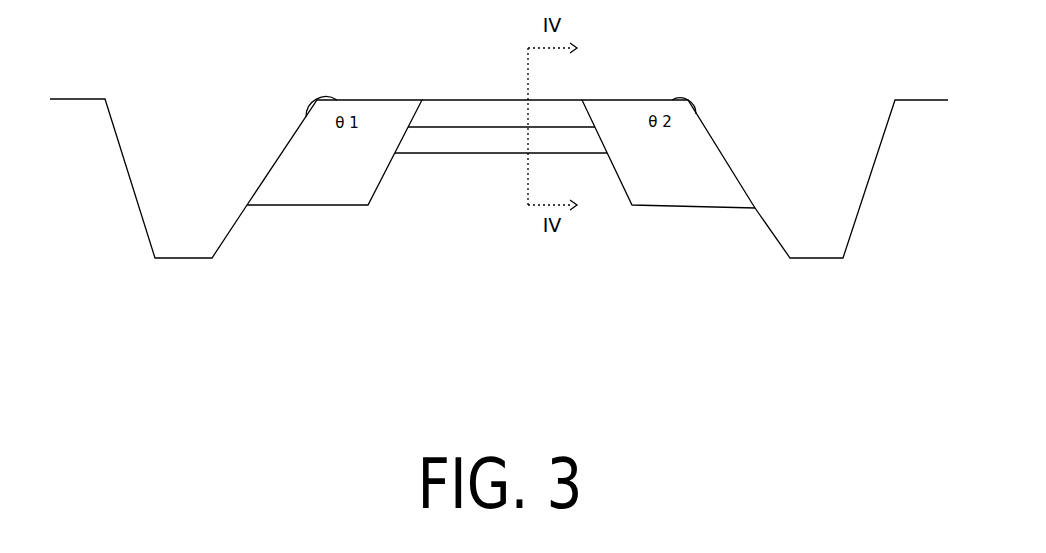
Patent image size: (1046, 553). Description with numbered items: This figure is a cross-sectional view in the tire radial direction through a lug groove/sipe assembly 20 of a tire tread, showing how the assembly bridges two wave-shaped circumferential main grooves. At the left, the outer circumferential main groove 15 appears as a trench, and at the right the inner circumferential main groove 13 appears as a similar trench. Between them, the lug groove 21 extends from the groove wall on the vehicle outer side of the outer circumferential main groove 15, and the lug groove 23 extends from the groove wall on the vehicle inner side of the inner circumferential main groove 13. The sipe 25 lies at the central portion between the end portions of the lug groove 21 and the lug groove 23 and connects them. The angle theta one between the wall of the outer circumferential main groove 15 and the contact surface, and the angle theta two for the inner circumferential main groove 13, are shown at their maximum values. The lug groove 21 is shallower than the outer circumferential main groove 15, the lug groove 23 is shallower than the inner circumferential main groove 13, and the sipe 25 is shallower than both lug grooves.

The inner circumferential main groove 13 is at (820, 94).
The outer circumferential main groove 15 is at (205, 102).
The lug groove/sipe assembly 20 is at (295, 255).
The lug groove 21 is at (308, 192).
The lug groove 23 is at (677, 193).
The sipe 25 is at (505, 145).